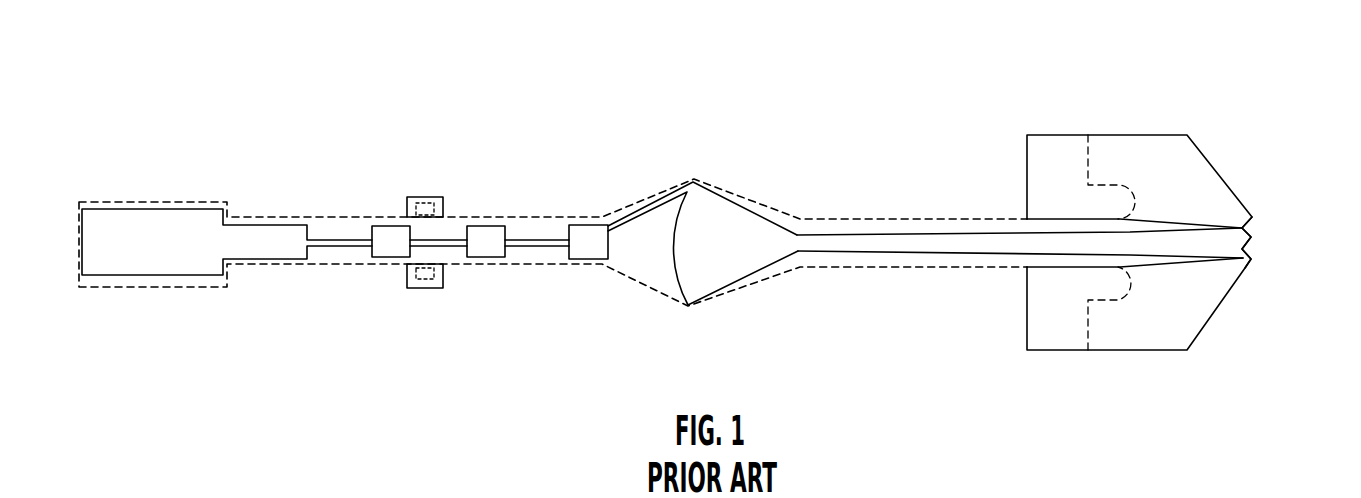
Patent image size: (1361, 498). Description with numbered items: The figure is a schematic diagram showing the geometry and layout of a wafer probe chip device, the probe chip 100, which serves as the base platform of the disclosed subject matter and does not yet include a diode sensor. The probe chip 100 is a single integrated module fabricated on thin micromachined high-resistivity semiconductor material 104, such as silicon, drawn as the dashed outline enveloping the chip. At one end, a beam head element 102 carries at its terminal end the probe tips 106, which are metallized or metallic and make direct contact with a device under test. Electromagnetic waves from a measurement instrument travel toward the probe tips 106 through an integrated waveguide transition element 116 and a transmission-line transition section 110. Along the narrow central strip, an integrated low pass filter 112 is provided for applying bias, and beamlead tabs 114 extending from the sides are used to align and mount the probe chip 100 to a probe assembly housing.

The probe chip 100 is at (1172, 60).
The beam head element 102 is at (1173, 333).
The semiconductor material 104 is at (332, 217).
The probe tips 106 is at (1266, 217).
The transmission-line transition section 110 is at (963, 232).
The low pass filter 112 is at (487, 258).
The beamlead tabs 114 is at (417, 289).
The waveguide transition element 116 is at (725, 220).